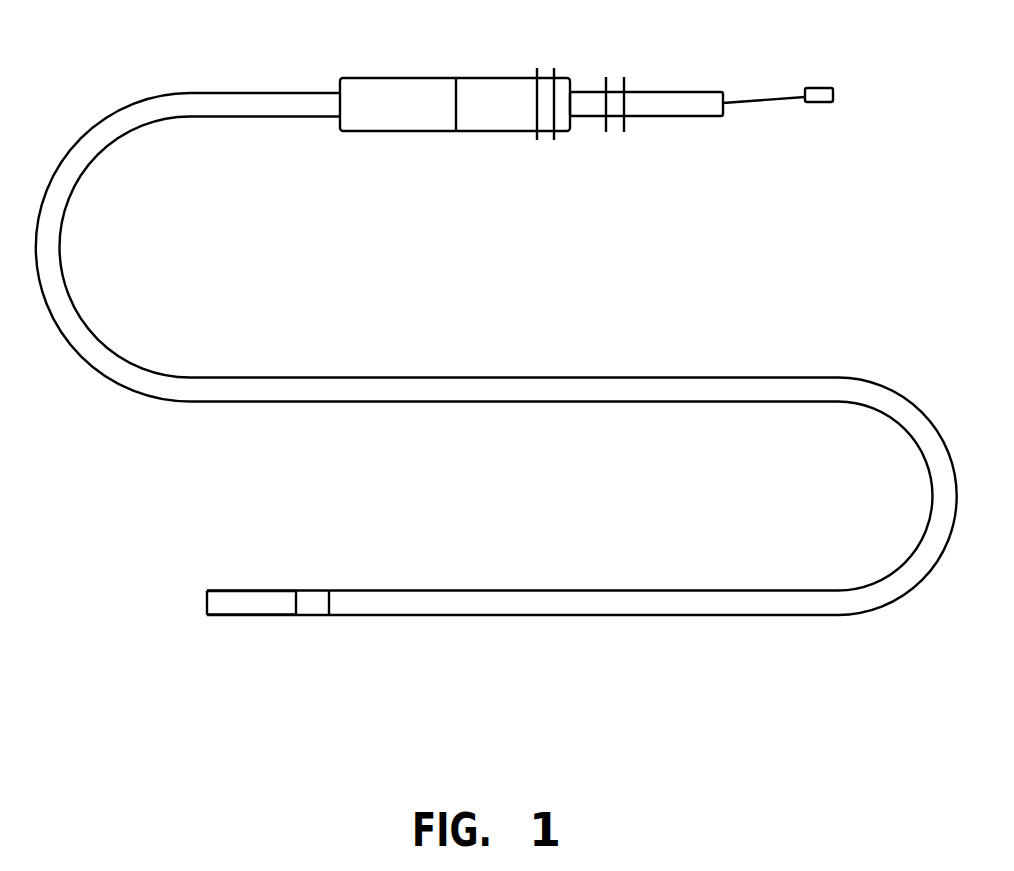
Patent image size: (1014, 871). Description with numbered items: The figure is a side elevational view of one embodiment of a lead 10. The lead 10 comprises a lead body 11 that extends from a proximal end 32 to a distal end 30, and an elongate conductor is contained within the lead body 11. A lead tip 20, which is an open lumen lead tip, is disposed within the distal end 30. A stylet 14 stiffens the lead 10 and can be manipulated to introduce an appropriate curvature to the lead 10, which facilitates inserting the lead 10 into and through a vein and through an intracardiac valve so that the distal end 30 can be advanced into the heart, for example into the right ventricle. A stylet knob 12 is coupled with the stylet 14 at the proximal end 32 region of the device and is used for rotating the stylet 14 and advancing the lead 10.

The lead 10 is at (496, 403).
The lead body 11 is at (610, 615).
The stylet knob 12 is at (820, 103).
The stylet 14 is at (764, 96).
The lead tip 20 is at (218, 617).
The distal end 30 is at (248, 590).
The proximal end 32 is at (713, 117).